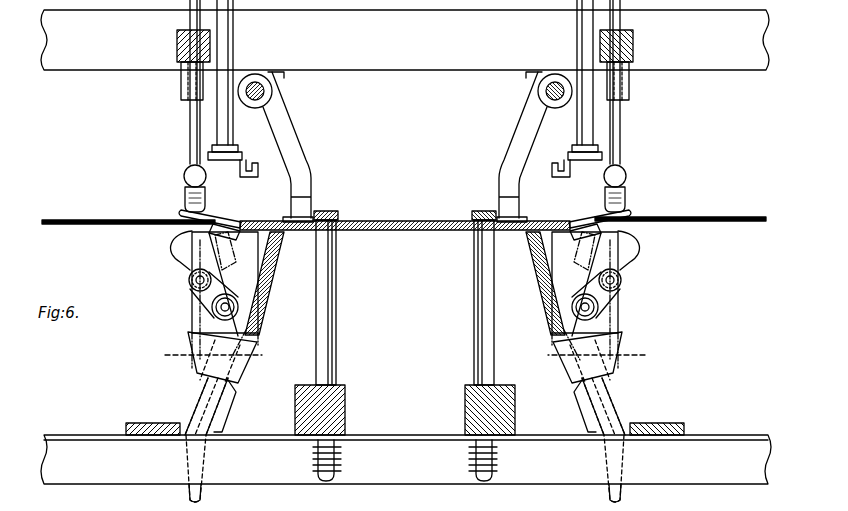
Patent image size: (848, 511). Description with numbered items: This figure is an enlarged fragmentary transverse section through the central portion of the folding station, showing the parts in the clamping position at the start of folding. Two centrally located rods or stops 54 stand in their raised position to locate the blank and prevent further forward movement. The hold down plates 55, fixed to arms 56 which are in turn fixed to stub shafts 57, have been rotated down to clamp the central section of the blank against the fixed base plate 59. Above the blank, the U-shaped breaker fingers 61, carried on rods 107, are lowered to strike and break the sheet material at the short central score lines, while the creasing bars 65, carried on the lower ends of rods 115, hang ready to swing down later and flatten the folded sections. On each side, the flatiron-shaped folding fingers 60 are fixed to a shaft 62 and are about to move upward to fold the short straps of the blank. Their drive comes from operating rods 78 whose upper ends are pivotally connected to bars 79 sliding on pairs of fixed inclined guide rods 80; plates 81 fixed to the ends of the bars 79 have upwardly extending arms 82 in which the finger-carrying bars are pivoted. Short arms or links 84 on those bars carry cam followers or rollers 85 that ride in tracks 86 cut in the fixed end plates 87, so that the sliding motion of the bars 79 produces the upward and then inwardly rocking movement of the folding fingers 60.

The rods or stops 54 is at (334, 320).
The hold down plates 55 is at (288, 218).
The arms 56 is at (296, 147).
The stub shafts 57 is at (265, 92).
The fixed base plate 59 is at (393, 231).
The folding fingers 60 is at (173, 248).
The U-shaped breaker fingers 61 is at (185, 190).
The shaft 62 is at (197, 283).
The creasing bars 65 is at (245, 176).
The operating rods 78 is at (191, 498).
The bars 79 is at (404, 356).
The fixed inclined guide rods 80 is at (204, 412).
The plates 81 is at (241, 361).
The upwardly extending arms 82 is at (612, 305).
The short arms or links 84 is at (205, 300).
The cam followers or rollers 85 is at (239, 316).
The tracks 86 is at (256, 284).
The fixed end plates 87 is at (265, 250).
The rods 107 is at (190, 131).
The rods 115 is at (234, 31).